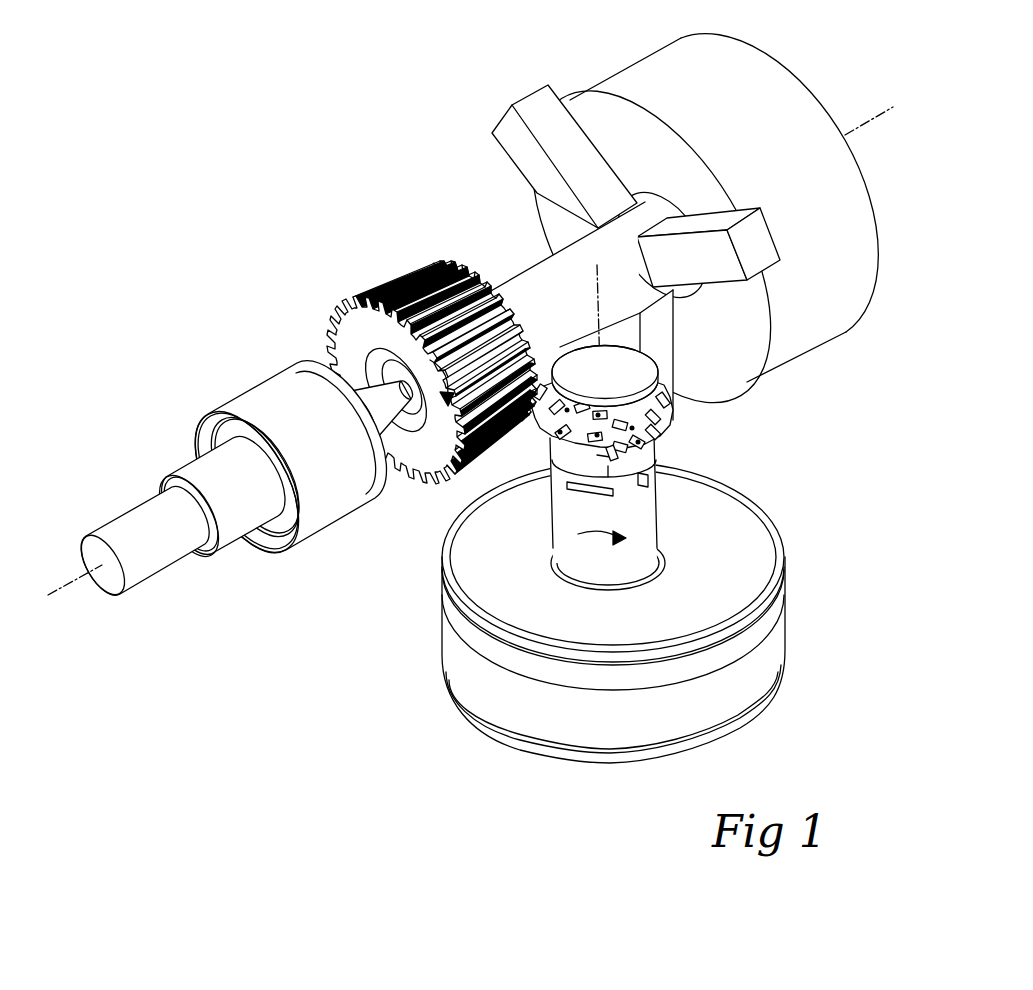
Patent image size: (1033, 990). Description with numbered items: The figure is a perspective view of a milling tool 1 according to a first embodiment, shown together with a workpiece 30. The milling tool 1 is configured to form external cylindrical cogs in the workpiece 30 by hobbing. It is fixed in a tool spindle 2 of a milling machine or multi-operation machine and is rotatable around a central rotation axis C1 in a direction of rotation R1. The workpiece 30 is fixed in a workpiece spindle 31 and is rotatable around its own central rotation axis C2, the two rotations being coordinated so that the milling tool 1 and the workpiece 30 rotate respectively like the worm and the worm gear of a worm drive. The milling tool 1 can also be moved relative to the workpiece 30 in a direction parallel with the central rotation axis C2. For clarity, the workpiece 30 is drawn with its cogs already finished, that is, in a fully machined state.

The milling tool 1 is at (655, 448).
The tool spindle 2 is at (737, 527).
The workpiece 30 is at (420, 359).
The workpiece spindle 31 is at (510, 287).
The central rotation axis C1 is at (598, 287).
The central rotation axis C2 is at (70, 580).
The direction of rotation R1 is at (602, 552).